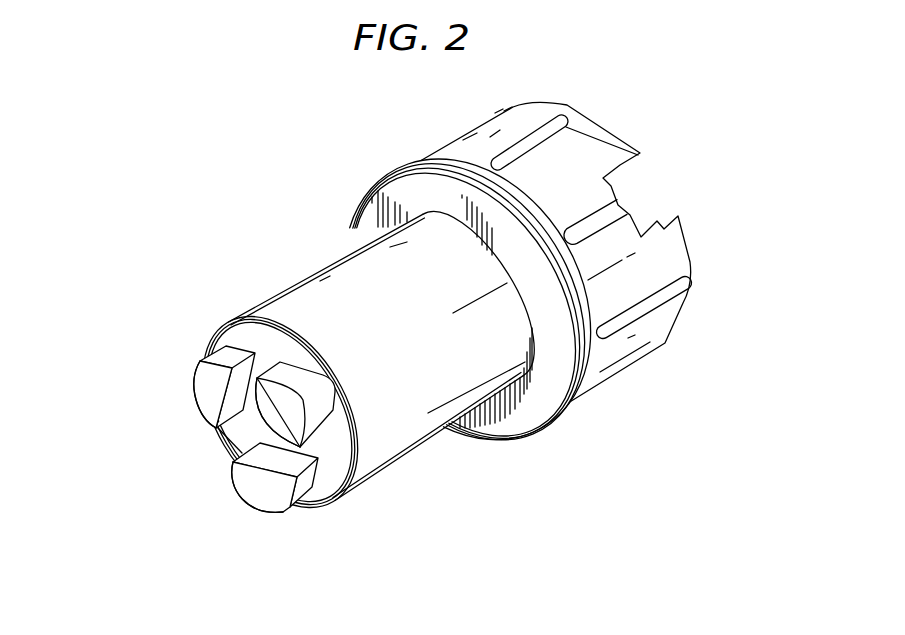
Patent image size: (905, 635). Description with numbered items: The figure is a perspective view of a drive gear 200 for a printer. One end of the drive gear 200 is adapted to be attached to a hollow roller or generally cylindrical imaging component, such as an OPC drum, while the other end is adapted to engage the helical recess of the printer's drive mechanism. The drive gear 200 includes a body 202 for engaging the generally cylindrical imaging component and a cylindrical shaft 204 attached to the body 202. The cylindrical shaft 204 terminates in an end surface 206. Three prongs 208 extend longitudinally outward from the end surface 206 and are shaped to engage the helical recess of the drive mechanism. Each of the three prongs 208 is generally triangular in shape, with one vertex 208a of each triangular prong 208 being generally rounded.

The drive gear 200 is at (688, 90).
The body 202 is at (618, 372).
The cylindrical shaft 204 is at (398, 422).
The end surface 206 is at (257, 309).
The prongs 208 is at (205, 389).
The vertex 208a is at (190, 364).